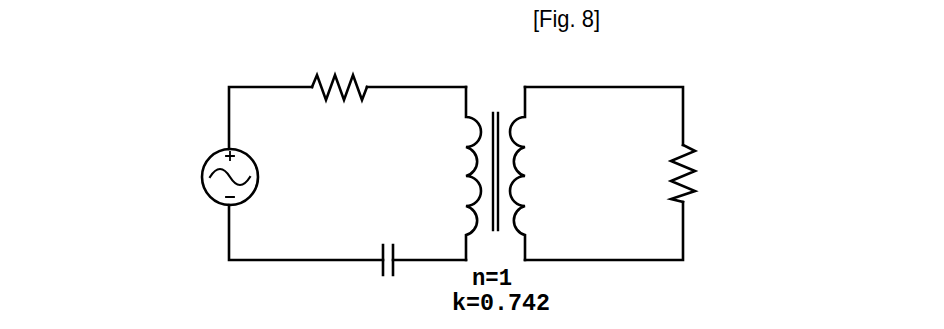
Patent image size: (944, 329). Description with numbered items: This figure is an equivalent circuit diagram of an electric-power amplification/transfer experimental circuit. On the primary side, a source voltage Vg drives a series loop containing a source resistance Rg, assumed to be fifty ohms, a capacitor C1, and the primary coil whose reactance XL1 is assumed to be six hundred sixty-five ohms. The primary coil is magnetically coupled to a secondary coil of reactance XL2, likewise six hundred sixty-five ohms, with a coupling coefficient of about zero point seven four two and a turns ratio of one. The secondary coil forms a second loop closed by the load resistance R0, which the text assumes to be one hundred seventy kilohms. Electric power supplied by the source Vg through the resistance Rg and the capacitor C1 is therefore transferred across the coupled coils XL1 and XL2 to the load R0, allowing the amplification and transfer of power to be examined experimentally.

The source resistance Rg is at (354, 69).
The source voltage Vg is at (188, 177).
The primary capacitor C1 is at (386, 244).
The primary coil reactance XL1 is at (420, 173).
The secondary coil reactance XL2 is at (569, 173).
The load resistance R0 is at (739, 173).